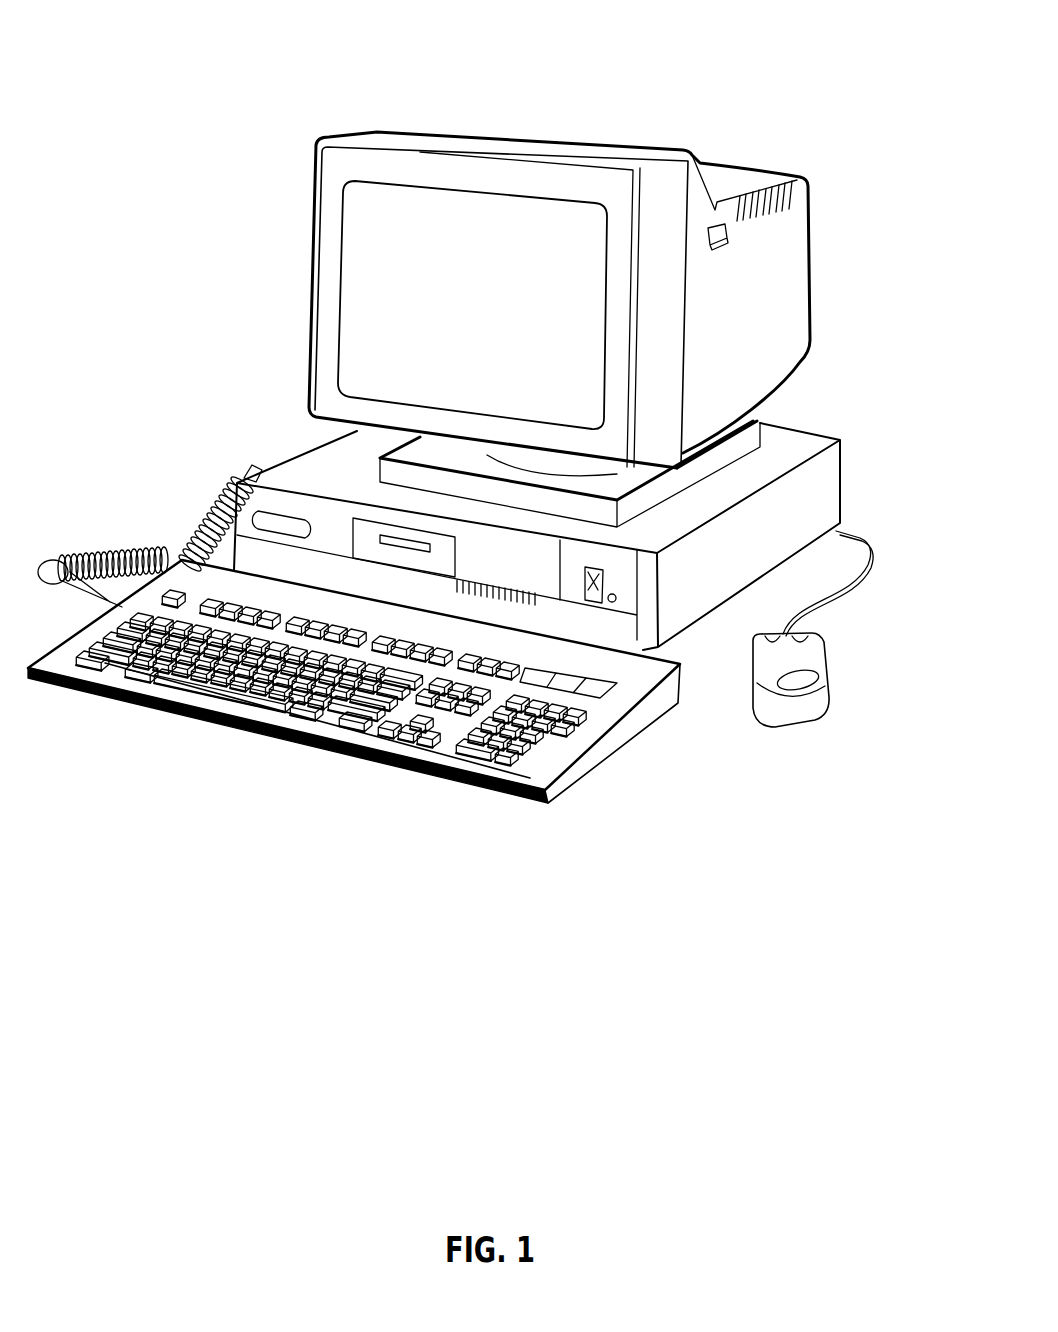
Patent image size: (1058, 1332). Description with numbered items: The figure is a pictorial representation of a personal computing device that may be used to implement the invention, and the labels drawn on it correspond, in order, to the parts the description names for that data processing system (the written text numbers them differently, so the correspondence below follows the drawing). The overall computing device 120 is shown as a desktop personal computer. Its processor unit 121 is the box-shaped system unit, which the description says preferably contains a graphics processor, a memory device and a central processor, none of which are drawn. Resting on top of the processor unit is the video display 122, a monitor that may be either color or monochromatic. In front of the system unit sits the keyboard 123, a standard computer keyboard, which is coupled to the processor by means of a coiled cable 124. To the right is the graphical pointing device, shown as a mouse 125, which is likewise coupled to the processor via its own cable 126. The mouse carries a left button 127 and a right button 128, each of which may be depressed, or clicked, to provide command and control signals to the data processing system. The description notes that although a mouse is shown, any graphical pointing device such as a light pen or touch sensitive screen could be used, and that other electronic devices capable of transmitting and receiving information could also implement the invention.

The computer system 120 is at (680, 103).
The system unit / CPU 121 is at (827, 477).
The display monitor 122 is at (308, 358).
The keyboard 123 is at (350, 760).
The keyboard cable 124 is at (193, 485).
The mouse 125 is at (810, 717).
The mouse cable 126 is at (843, 583).
The mouse button 127 is at (765, 638).
The mouse button 128 is at (815, 643).